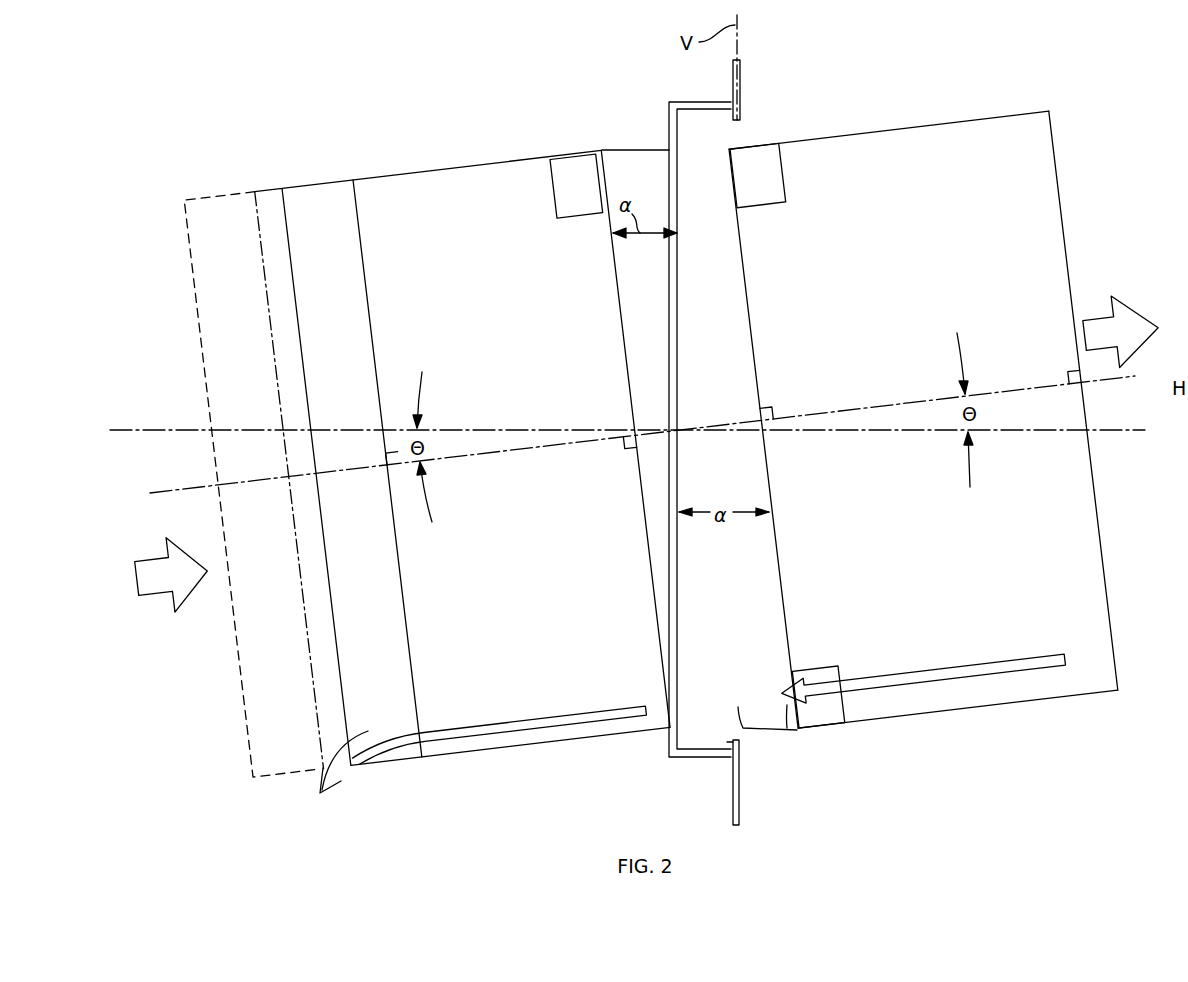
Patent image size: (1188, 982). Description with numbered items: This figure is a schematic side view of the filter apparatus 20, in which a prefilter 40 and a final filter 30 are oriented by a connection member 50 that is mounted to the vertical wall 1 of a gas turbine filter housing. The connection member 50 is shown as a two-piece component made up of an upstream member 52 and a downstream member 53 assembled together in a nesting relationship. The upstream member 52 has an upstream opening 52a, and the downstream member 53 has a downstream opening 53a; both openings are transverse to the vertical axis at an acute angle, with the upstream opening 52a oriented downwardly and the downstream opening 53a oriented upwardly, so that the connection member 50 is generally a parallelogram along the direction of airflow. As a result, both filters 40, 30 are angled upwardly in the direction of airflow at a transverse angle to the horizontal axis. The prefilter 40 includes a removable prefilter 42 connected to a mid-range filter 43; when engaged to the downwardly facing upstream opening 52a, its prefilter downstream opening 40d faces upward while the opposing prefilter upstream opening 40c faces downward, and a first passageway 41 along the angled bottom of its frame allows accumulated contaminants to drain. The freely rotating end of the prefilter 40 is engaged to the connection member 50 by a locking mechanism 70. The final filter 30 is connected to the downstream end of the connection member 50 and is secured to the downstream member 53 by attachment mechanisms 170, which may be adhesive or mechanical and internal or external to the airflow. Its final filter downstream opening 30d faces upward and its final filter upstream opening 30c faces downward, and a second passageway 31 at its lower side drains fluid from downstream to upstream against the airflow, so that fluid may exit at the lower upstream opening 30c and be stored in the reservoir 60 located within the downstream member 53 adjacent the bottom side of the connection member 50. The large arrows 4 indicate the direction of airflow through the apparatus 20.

The wall 1 is at (752, 80).
The direction of movement 4 is at (162, 597).
The filter apparatus 20 is at (338, 92).
The final filter 30 is at (1033, 158).
The final filter upstream opening 30c is at (747, 355).
The final filter downstream opening 30d is at (1083, 230).
The second passageway 31 is at (975, 665).
The prefilter 40 is at (400, 154).
The prefilter upstream opening 40c is at (172, 325).
The prefilter downstream opening 40d is at (632, 300).
The first passageway 41 is at (525, 719).
The removable prefilter 42 is at (322, 318).
The mid-range filter 43 is at (467, 325).
The connection member 50 is at (621, 103).
The upstream member 52 is at (672, 748).
The upstream opening 52a is at (612, 333).
The downstream member 53 is at (739, 743).
The downstream opening 53a is at (773, 323).
The reservoir 60 is at (763, 715).
The locking mechanism 70 is at (580, 214).
The attachment mechanism 170 is at (800, 182).